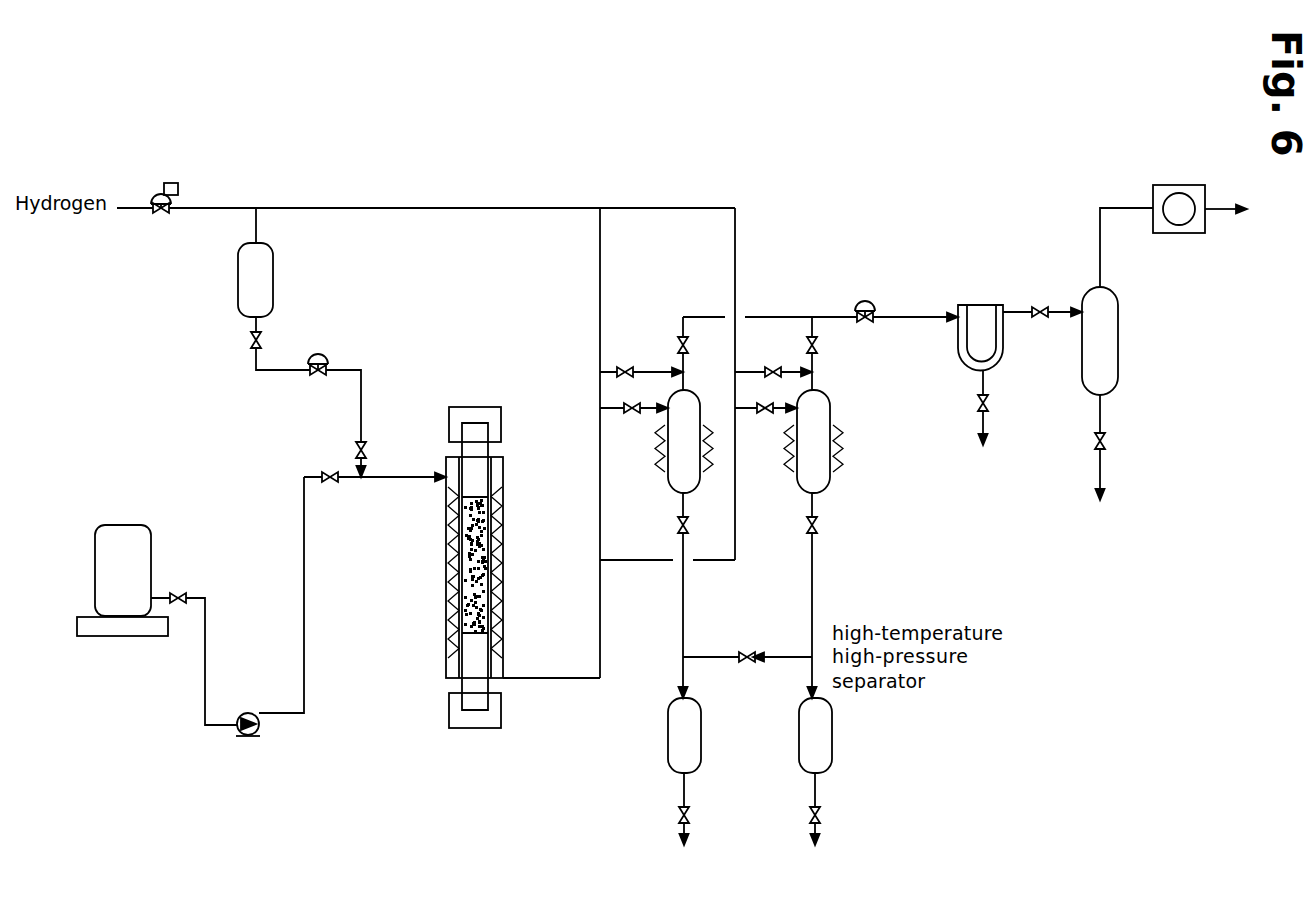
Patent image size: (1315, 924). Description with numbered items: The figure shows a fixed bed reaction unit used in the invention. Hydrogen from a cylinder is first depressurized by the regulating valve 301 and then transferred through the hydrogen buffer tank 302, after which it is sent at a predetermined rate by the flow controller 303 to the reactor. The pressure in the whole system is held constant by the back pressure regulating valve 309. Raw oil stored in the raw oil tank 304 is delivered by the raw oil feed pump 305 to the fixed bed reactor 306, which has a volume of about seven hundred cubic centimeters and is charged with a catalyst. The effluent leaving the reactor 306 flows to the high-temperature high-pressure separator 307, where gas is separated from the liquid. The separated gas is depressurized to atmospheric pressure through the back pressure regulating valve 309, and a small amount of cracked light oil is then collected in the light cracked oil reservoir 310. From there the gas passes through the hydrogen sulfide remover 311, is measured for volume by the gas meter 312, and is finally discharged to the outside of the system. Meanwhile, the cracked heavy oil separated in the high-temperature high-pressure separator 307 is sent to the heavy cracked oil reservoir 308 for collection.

The regulating valve 301 is at (243, 182).
The hydrogen buffer tank 302 is at (380, 306).
The flow controller 303 is at (394, 399).
The raw oil tank 304 is at (157, 625).
The raw oil feed pump 305 is at (320, 752).
The fixed bed reactor 306 is at (533, 597).
The high-temperature high-pressure separator 307 is at (747, 641).
The heavy cracked oil reservoir 308 is at (758, 791).
The back pressure regulating valve 309 is at (872, 267).
The light cracked oil reservoir 310 is at (996, 416).
The hydrogen sulfide remover 311 is at (1126, 396).
The gas meter 312 is at (1173, 190).